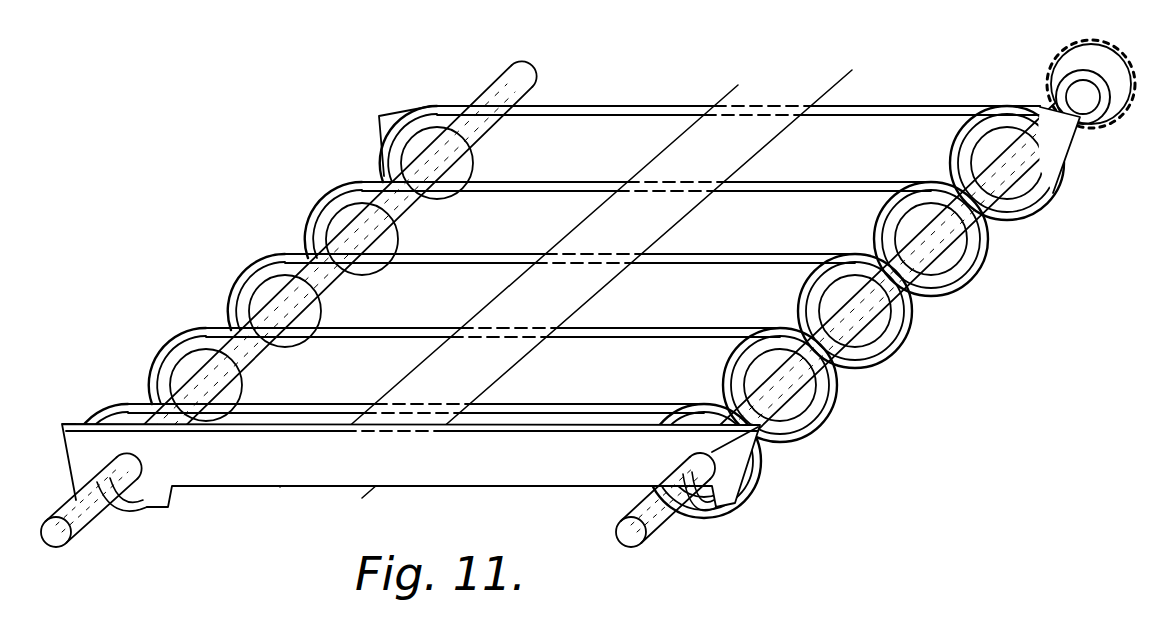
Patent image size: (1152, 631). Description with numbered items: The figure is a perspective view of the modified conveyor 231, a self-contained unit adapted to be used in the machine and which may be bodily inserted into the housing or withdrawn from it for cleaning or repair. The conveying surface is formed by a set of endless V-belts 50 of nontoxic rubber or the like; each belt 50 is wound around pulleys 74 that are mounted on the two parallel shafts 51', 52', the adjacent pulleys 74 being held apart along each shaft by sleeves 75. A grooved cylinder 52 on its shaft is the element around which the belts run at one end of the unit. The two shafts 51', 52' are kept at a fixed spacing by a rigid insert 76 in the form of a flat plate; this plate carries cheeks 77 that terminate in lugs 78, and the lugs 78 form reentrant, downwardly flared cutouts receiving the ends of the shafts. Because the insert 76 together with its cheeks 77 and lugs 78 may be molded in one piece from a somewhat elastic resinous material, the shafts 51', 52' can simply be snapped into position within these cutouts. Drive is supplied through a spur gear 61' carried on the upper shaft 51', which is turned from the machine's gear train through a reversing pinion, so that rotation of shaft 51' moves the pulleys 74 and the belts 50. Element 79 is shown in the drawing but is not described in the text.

The endless V-belts 50 is at (873, 107).
The shaft 51' is at (864, 334).
The grooved cylinder 52 is at (378, 153).
The shaft 52' is at (309, 312).
The spur gear 61' is at (1087, 72).
The pulleys 74 is at (246, 288).
The sleeves 75 is at (332, 230).
The rigid insert 76 is at (433, 305).
The cheeks 77 is at (953, 140).
The lugs 78 is at (383, 118).
The bearing bracket 79 is at (127, 508).
The modified conveyor 231 is at (653, 94).